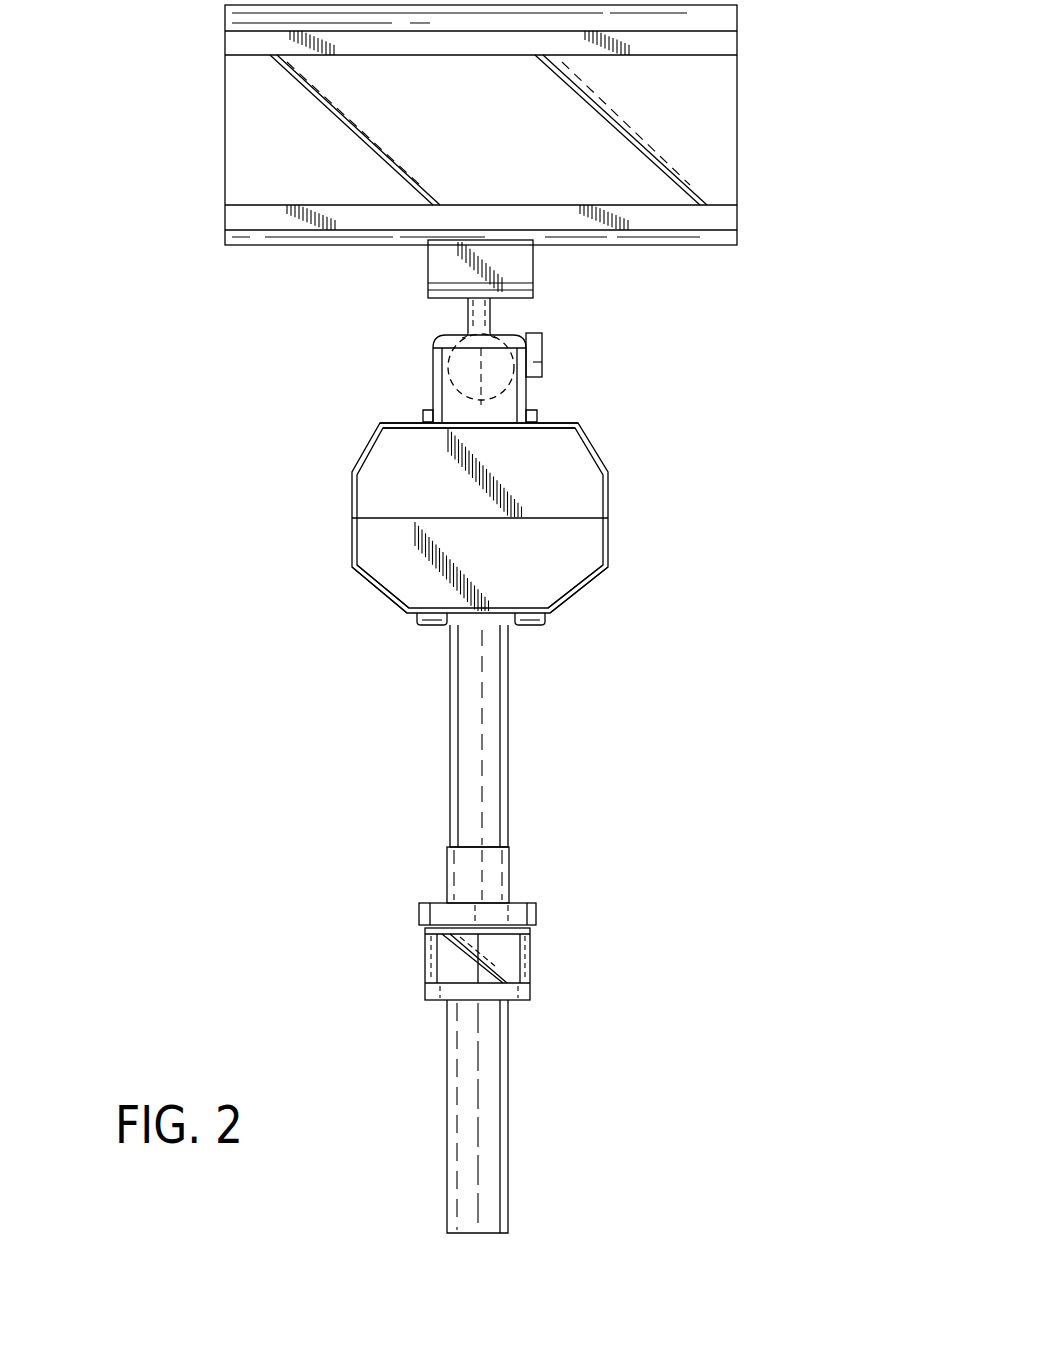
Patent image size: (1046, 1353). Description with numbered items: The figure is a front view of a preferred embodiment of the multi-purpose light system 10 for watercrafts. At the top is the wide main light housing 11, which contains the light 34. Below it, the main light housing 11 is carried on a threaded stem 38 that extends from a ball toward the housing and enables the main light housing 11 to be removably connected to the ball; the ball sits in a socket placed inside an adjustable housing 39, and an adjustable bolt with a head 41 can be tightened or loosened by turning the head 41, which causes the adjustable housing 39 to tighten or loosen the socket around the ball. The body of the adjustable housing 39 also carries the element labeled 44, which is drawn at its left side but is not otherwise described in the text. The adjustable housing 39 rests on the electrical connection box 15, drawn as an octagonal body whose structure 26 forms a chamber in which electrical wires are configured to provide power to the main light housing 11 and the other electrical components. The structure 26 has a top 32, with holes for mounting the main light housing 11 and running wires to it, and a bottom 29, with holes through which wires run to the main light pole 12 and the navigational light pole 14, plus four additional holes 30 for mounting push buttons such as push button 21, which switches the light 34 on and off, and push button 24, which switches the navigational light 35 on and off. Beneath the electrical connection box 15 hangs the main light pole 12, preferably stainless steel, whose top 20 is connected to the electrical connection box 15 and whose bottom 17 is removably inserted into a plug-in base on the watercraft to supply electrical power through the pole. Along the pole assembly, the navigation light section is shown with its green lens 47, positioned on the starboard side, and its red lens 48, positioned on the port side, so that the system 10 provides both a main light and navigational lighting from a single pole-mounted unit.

The multi-purpose light system 10 is at (203, 403).
The main light housing 11 is at (738, 73).
The main light pole 12 is at (508, 1110).
The navigational light pole 14 is at (508, 767).
The electrical connection box 15 is at (610, 483).
The structure 26 is at (480, 518).
The bottom of the main light pole 17 is at (488, 1233).
The top of the main light pole 20 is at (470, 625).
The push button 21 is at (587, 598).
The push button 24 is at (365, 590).
The bottom of the structure 29 is at (548, 622).
The holes 30 is at (355, 575).
The top of the structure 32 is at (568, 420).
The light 34 is at (490, 143).
The light 35 is at (445, 953).
The threaded stem 38 is at (468, 315).
The adjustable housing 39 is at (528, 390).
The head 41 is at (543, 340).
The ball housing 44 is at (433, 375).
The green lens 47 is at (455, 968).
The red lens 48 is at (505, 957).